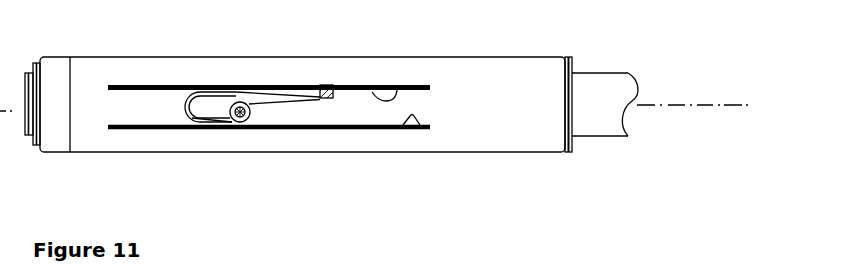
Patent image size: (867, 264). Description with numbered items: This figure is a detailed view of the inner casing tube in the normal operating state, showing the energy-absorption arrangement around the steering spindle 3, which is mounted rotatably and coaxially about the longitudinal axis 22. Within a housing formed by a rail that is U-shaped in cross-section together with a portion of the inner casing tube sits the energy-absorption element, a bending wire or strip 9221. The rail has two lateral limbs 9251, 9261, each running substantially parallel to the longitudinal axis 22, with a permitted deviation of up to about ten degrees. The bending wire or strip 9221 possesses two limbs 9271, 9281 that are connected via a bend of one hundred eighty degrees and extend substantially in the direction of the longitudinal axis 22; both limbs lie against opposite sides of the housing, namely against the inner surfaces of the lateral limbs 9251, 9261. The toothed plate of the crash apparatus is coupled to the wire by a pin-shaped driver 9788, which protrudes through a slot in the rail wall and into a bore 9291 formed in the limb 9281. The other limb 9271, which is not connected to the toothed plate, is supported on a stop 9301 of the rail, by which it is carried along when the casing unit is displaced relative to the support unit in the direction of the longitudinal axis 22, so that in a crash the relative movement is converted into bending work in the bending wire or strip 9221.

The steering spindle 3 is at (587, 119).
The longitudinal axis 22 is at (723, 105).
The bending wire or strip 9221 is at (186, 97).
The limb 9281 is at (205, 127).
The driver 9788 is at (243, 118).
The limb 9271 is at (273, 87).
The bore 9291 is at (252, 113).
The stop 9301 is at (329, 98).
The lateral limb 9251 is at (397, 88).
The lateral limb 9261 is at (420, 125).